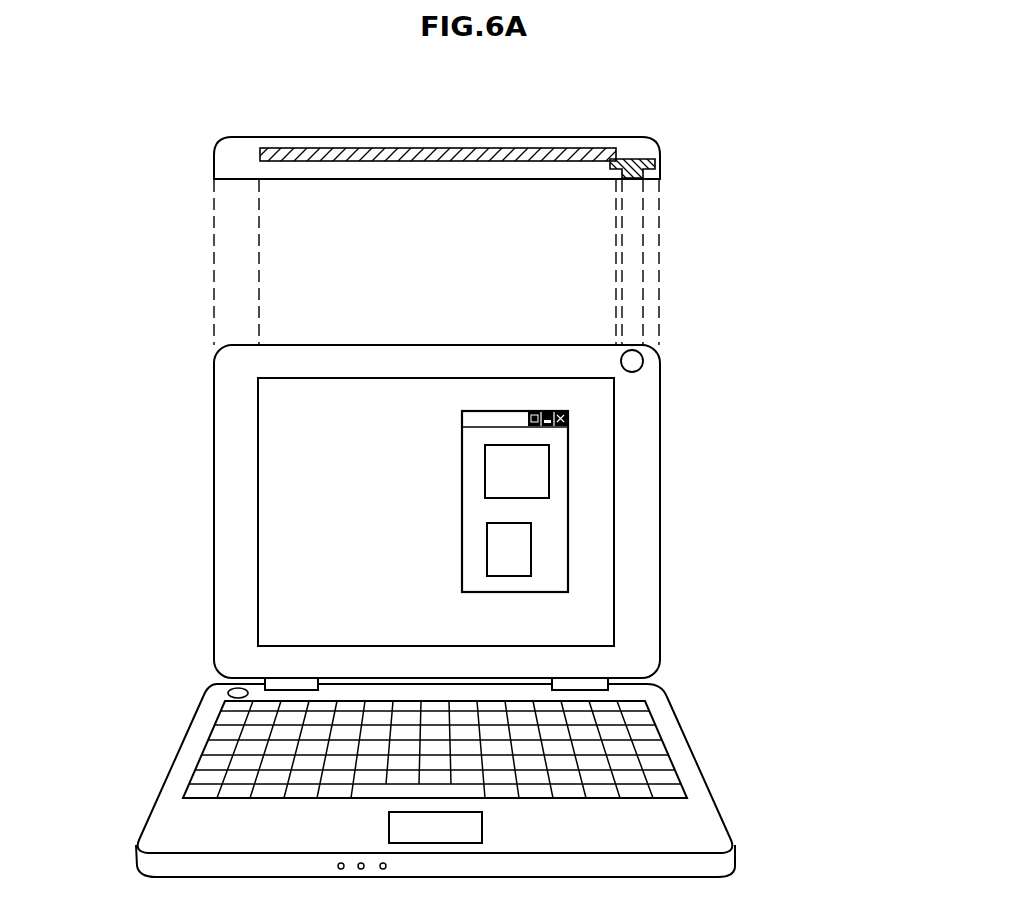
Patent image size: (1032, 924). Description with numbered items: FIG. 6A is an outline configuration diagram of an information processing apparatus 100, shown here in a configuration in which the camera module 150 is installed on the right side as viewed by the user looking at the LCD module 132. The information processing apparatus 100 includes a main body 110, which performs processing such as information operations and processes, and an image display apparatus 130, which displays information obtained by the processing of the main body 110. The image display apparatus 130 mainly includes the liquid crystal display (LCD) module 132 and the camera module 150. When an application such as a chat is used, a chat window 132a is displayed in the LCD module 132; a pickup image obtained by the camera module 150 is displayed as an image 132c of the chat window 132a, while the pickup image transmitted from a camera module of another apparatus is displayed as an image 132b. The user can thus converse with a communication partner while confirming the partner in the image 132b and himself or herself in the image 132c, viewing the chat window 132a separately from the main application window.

The information processing apparatus 100 is at (181, 134).
The main body 110 is at (688, 742).
The image display apparatus 130 is at (661, 158).
The liquid crystal display (LCD) module 132 is at (573, 150).
The chat window 132a is at (567, 562).
The image 132b is at (485, 476).
The image 132c is at (487, 540).
The camera module 150 is at (636, 178).